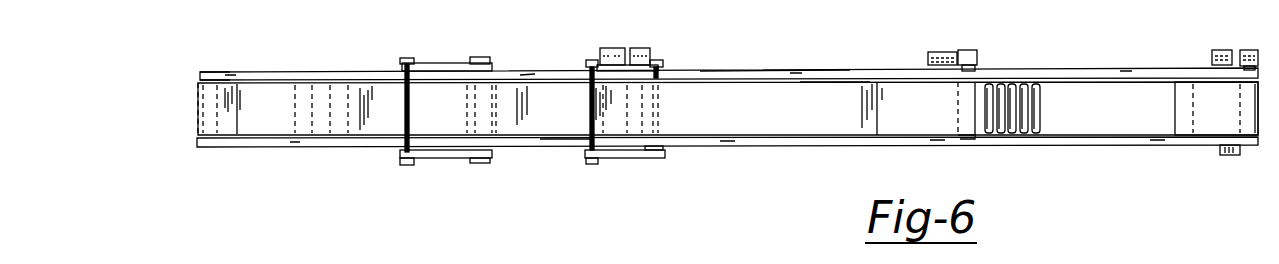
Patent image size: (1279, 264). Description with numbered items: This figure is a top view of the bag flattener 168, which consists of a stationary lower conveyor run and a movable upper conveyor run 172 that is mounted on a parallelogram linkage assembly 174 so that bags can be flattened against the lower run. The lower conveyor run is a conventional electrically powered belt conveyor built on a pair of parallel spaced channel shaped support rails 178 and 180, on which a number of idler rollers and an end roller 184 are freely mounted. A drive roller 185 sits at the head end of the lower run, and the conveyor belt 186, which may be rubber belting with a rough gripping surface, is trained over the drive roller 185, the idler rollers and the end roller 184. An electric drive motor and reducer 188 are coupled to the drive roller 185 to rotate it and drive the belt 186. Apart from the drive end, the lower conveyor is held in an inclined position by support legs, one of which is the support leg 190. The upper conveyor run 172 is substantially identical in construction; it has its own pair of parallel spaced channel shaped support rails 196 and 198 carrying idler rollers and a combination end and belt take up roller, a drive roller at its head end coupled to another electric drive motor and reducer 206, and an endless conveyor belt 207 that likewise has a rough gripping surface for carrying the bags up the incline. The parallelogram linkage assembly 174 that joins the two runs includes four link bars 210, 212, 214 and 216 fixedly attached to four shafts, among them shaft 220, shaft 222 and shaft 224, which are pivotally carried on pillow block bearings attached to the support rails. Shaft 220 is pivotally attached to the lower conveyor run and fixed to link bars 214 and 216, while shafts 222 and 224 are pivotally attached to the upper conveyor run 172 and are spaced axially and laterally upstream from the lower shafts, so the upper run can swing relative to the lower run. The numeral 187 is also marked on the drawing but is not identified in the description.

The bag flattener 168 is at (538, 72).
The upper conveyor run 172 is at (828, 110).
The parallelogram linkage assembly 174 is at (438, 62).
The support rail 178 is at (207, 72).
The support rail 180 is at (247, 147).
The end roller 184 is at (202, 98).
The drive roller 185 is at (968, 96).
The conveyor belt 186 is at (263, 92).
The panel rib 187 is at (378, 130).
The electric drive motor and reducer 188 is at (962, 47).
The support leg 190 is at (273, 0).
The support rail 196 is at (770, 70).
The support rail 198 is at (573, 137).
The electric drive motor and reducer 206 is at (621, 47).
The endless conveyor belt 207 is at (815, 90).
The link bar 210 is at (637, 163).
The link bar 212 is at (588, 59).
The link bar 214 is at (430, 164).
The link bar 216 is at (457, 63).
The shaft 220 is at (493, 163).
The shaft 222 is at (584, 150).
The shaft 224 is at (412, 86).